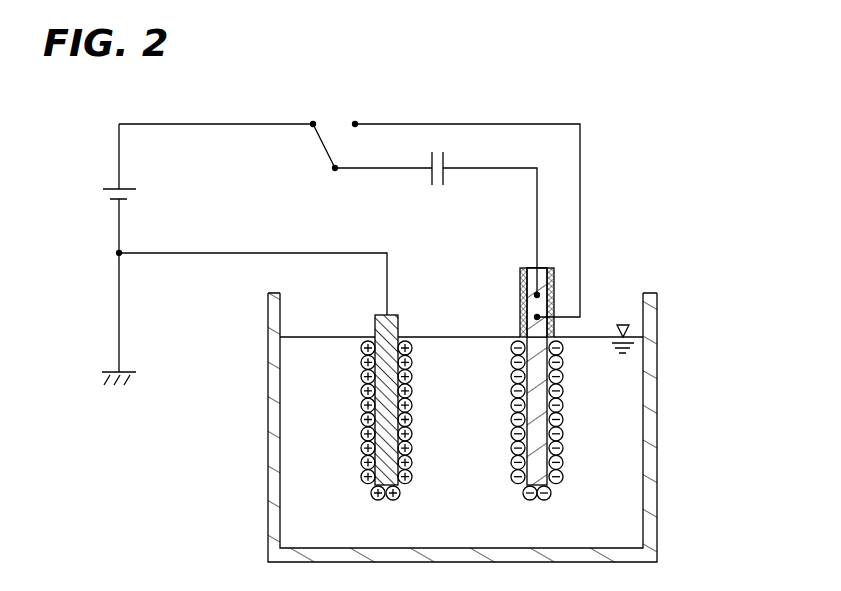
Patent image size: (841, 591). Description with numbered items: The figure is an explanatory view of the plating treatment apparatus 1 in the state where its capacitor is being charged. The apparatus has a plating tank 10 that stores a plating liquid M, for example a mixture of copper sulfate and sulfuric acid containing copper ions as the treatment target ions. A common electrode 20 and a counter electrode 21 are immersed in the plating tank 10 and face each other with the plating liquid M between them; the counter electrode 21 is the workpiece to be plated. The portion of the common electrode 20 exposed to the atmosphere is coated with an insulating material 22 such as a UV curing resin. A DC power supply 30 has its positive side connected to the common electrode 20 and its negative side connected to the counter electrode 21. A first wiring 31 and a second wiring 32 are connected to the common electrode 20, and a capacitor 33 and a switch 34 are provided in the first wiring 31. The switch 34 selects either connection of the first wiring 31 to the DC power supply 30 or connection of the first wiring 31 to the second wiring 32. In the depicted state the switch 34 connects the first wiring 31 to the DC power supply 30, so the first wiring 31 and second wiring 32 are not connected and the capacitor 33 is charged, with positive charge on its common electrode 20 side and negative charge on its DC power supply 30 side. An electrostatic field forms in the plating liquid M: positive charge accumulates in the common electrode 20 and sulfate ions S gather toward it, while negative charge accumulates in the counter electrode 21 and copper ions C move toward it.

The plating treatment apparatus 1 is at (409, 85).
The plating tank 10 is at (657, 455).
The plating liquid M is at (632, 370).
The common electrode 20 is at (562, 451).
The counter electrode 21 is at (411, 456).
The insulating material 22 is at (520, 291).
The DC power supply 30 is at (106, 187).
The first wiring 31 is at (536, 229).
The second wiring 32 is at (581, 176).
The capacitor 33 is at (428, 178).
The switch 34 is at (322, 154).
The copper ions C is at (396, 501).
The sulfate ions S is at (527, 501).